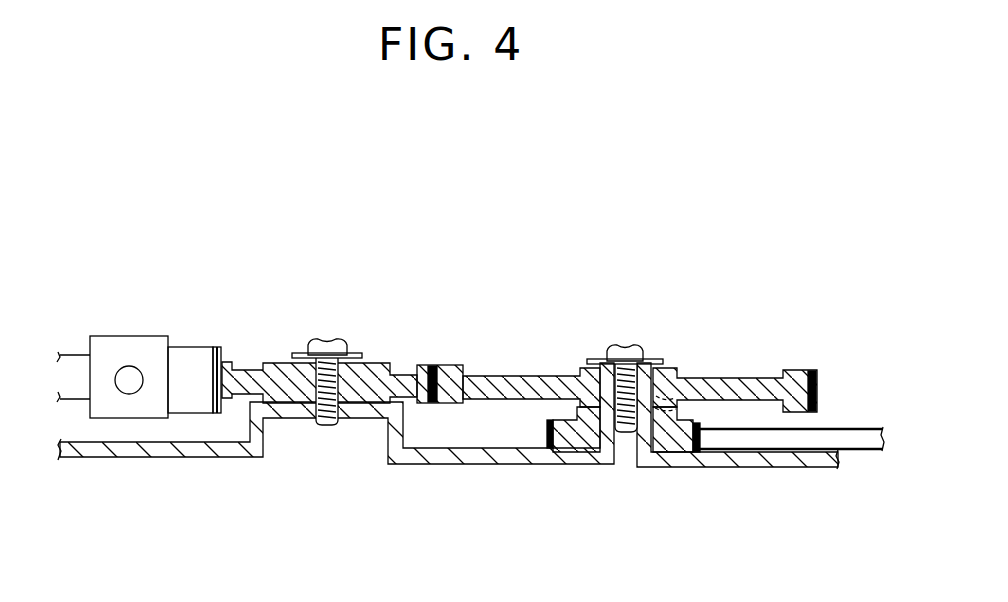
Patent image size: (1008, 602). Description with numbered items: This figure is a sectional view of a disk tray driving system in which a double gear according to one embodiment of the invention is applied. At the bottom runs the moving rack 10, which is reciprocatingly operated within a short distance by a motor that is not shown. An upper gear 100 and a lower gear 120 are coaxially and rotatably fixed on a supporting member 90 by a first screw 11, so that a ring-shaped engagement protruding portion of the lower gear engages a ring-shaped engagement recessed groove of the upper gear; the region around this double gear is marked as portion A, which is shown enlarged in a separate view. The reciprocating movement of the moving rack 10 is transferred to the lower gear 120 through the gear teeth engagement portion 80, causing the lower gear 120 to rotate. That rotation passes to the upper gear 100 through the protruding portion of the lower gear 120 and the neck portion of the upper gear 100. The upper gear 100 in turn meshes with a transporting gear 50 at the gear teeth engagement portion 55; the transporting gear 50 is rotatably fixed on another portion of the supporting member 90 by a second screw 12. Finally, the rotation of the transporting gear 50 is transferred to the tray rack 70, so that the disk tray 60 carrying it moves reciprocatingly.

The moving rack 10 is at (843, 428).
The first screw 11 is at (635, 345).
The second screw 12 is at (333, 338).
The transporting gear 50 is at (375, 363).
The gear teeth engagement portion 55 is at (432, 365).
The disk tray 60 is at (105, 336).
The tray rack 70 is at (211, 347).
The gear teeth engagement portion 80 is at (688, 455).
The supporting member 90 is at (783, 462).
The upper gear 100 is at (478, 373).
The lower gear 120 is at (538, 455).
The portion A is at (673, 372).